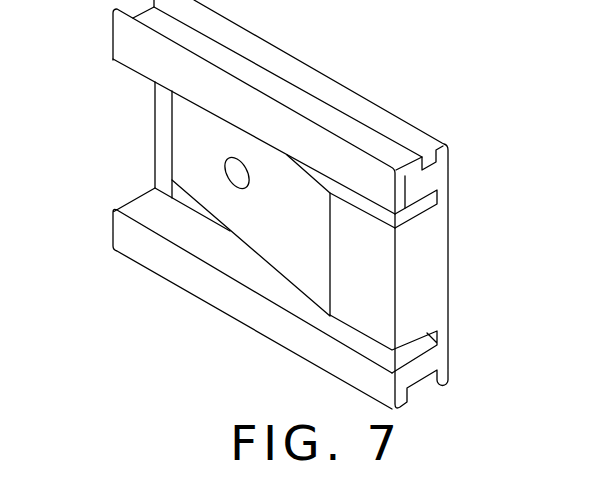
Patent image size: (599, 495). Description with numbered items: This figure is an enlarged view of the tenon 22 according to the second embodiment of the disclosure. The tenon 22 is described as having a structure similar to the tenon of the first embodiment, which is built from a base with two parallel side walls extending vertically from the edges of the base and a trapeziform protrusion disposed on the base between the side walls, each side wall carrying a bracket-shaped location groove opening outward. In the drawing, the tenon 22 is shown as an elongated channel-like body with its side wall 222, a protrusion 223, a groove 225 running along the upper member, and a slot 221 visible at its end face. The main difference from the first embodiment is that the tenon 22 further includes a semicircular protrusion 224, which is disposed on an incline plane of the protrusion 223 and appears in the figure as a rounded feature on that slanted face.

The tenon 22 is at (371, 74).
The slot 221 is at (425, 182).
The side wall 222 is at (163, 122).
The protrusion 223 is at (200, 152).
The semicircular protrusion 224 is at (237, 178).
The groove 225 is at (384, 148).